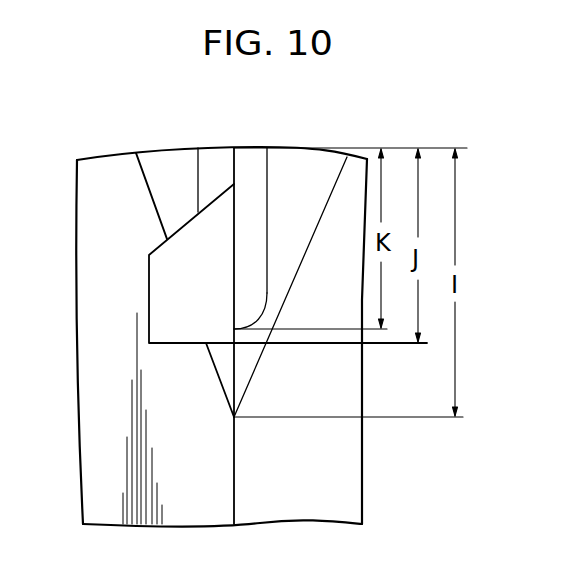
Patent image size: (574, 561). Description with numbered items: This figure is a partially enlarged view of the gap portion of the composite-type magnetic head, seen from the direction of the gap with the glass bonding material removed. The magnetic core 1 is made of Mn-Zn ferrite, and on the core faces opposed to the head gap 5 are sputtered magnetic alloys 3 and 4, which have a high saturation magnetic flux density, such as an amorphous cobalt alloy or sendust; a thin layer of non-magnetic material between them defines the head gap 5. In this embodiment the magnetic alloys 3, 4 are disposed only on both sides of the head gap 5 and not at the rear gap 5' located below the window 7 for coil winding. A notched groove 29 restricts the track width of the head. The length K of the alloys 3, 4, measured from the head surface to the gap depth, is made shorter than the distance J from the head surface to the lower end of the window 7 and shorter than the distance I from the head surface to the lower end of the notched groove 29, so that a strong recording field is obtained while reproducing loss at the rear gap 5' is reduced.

The magnetic core 1 is at (116, 468).
The magnetic alloy 3 is at (213, 165).
The magnetic alloy 4 is at (250, 160).
The head gap 5 is at (233, 263).
The rear gap 5' is at (259, 470).
The window for coil winding 7 is at (149, 305).
The notched groove 29 is at (305, 250).